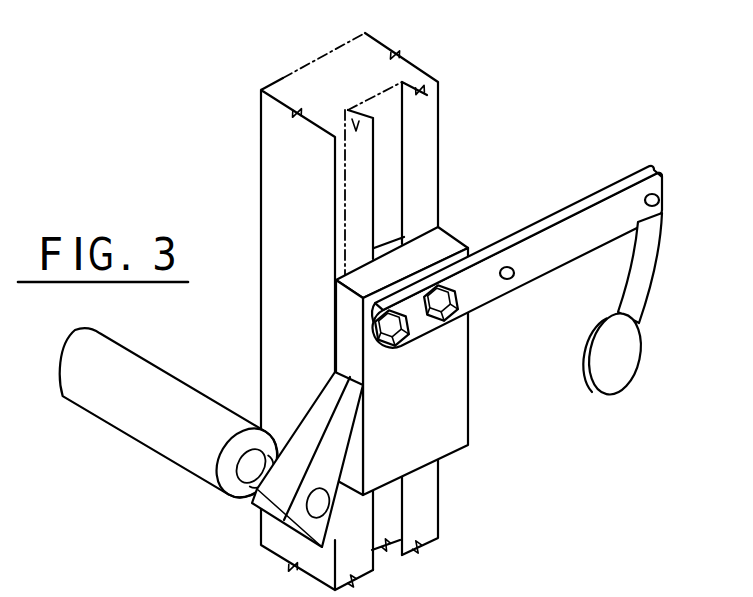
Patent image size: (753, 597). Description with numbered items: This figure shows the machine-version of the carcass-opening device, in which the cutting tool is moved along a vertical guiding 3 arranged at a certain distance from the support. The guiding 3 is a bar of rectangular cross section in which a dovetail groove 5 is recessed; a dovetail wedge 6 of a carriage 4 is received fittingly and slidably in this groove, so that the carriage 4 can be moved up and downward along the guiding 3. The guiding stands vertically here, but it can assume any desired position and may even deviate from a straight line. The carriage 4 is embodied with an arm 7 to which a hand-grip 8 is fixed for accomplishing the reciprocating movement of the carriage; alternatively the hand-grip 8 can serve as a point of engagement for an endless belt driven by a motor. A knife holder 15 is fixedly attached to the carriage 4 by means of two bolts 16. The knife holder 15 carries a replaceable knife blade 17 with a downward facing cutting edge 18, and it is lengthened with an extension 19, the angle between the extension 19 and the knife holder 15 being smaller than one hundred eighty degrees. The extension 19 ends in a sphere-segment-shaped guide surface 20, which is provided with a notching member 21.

The vertical guiding 3 is at (296, 80).
The carriage 4 is at (435, 423).
The dovetail groove 5 is at (385, 112).
The dovetail wedge 6 is at (387, 243).
The arm 7 is at (277, 495).
The hand-grip 8 is at (163, 415).
The knife holder 15 is at (517, 236).
The bolts 16 is at (400, 337).
The knife blade 17 is at (548, 255).
The cutting edge 18 is at (566, 216).
The extension 19 is at (648, 252).
The sphere-segment-shaped guide surface 20 is at (627, 379).
The notching member 21 is at (592, 383).